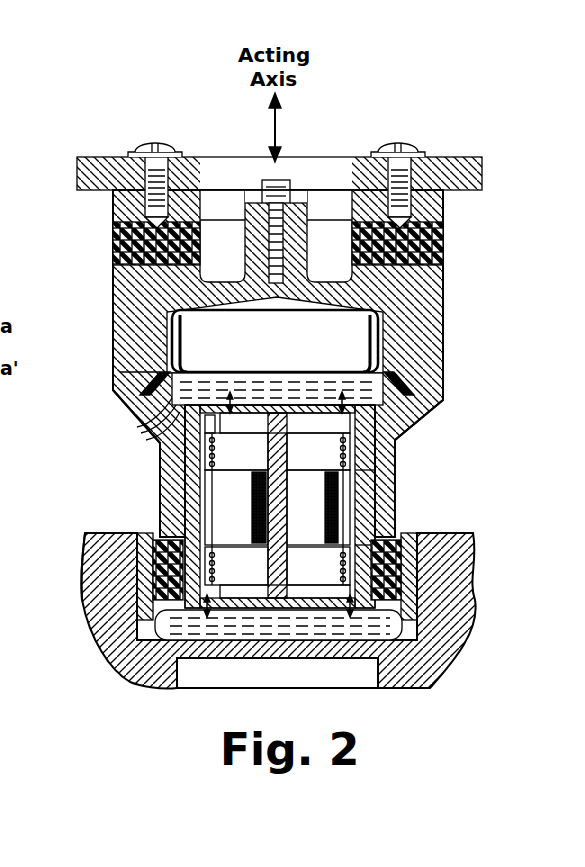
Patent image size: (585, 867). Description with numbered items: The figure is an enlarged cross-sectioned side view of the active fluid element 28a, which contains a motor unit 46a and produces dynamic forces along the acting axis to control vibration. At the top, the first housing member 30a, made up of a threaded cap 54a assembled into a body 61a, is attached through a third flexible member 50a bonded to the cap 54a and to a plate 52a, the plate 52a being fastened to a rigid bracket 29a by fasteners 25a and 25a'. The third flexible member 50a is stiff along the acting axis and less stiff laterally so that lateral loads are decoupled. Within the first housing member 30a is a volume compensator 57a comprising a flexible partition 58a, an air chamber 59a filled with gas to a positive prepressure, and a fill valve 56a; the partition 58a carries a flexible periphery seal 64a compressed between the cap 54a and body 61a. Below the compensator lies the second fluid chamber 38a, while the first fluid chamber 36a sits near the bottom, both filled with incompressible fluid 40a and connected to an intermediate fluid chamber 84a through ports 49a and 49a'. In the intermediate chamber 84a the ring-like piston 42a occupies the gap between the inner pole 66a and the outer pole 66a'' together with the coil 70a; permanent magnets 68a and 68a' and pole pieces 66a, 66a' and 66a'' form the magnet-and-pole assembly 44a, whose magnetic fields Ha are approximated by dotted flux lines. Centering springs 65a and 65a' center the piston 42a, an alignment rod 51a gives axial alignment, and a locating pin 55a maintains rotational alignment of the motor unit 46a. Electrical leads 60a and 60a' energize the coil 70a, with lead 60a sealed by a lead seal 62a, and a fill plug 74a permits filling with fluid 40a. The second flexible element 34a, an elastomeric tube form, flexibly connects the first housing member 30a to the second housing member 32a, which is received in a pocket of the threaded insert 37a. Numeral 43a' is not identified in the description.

The fastener 25a is at (122, 161).
The fastener 25a' is at (418, 159).
The rigid bracket 29a is at (200, 157).
The fill valve 56a is at (282, 178).
The plate 52a is at (113, 207).
The third flexible member 50a is at (443, 240).
The threaded cap 54a is at (443, 300).
The volume compensator 57a is at (160, 329).
The first housing member 30a is at (455, 349).
The air chamber 59a is at (300, 331).
The flexible partition 58a is at (237, 373).
The second fluid chamber 38a is at (327, 404).
The flexible periphery seal 64a is at (135, 370).
The lead seal 62a is at (135, 428).
The electrical lead 60a is at (110, 422).
The electrical lead 60a' is at (112, 446).
The passage 43a' is at (80, 422).
The intermediate fluid chamber 84a is at (190, 460).
The locating pin 55a is at (165, 500).
The piston 42a is at (172, 522).
The motor unit 46a is at (153, 530).
The active fluid element 28a is at (125, 592).
The port 49a' is at (453, 460).
The body 61a is at (445, 395).
The pole piece 66a' is at (442, 471).
The centering spring 65a is at (344, 442).
The magnet-and-pole assembly 44a is at (360, 492).
The coil 70a is at (395, 500).
The centering spring 65a' is at (343, 554).
The permanent magnet 68a is at (277, 509).
The inner pole 66a is at (277, 507).
The permanent magnet 68a' is at (277, 566).
The second flexible element 34a is at (455, 580).
The outer pole 66a'' is at (453, 588).
The second housing member 32a is at (430, 626).
The first fluid chamber 36a is at (335, 634).
The fluid 40a is at (120, 640).
The threaded insert 37a is at (100, 670).
The port 49a is at (146, 687).
The fill plug 74a is at (250, 658).
The alignment rod 51a is at (300, 680).
The magnetic fields Ha is at (380, 620).